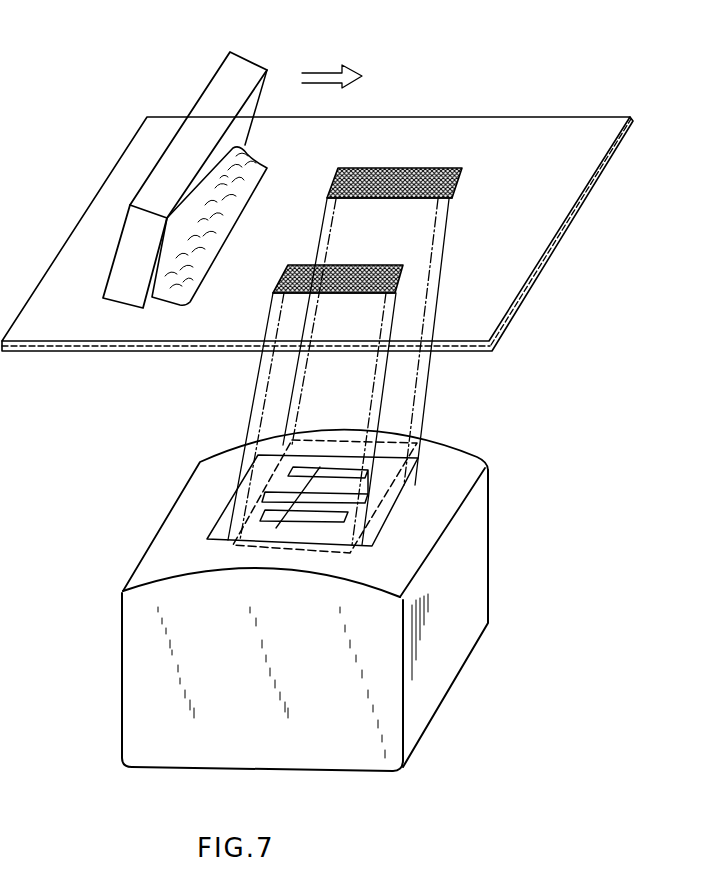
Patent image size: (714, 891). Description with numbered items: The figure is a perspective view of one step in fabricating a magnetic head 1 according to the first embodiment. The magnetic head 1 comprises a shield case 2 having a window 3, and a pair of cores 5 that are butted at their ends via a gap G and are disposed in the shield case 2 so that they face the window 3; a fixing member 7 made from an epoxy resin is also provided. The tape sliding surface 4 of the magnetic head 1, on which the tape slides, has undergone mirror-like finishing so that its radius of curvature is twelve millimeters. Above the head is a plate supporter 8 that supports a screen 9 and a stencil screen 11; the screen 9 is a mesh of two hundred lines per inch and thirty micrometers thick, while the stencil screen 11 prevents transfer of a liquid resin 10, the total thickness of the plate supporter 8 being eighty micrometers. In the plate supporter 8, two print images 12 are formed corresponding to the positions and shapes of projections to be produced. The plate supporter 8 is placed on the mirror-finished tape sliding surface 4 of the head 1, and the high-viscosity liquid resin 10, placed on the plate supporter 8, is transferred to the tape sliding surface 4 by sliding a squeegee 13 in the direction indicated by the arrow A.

The magnetic head 1 is at (288, 590).
The shield case 2 is at (488, 585).
The window 3 is at (400, 500).
The tape sliding surface 4 is at (457, 480).
The cores 5 is at (277, 505).
The fixing member 7 is at (403, 472).
The plate supporter 8 is at (593, 213).
The screen 9 is at (393, 168).
The liquid resin 10 is at (173, 293).
The stencil screen 11 is at (608, 167).
The print images 12 is at (467, 170).
The squeegee 13 is at (245, 65).
The gap G is at (313, 490).
The arrow A is at (332, 63).